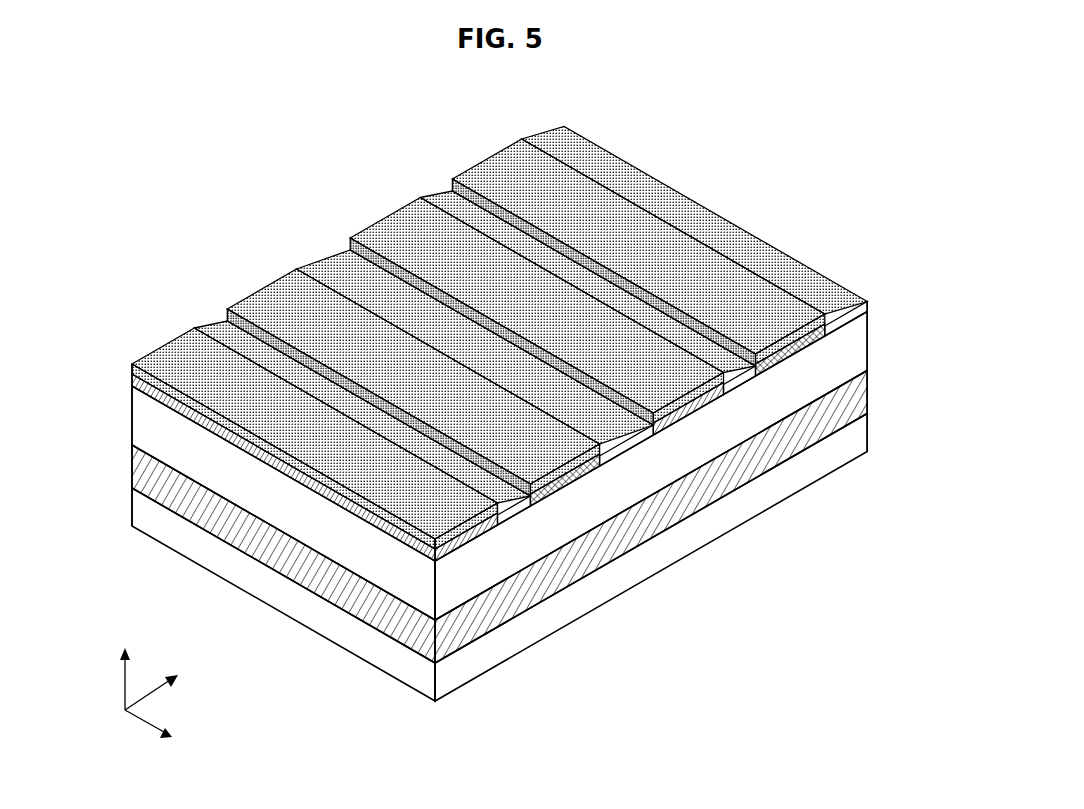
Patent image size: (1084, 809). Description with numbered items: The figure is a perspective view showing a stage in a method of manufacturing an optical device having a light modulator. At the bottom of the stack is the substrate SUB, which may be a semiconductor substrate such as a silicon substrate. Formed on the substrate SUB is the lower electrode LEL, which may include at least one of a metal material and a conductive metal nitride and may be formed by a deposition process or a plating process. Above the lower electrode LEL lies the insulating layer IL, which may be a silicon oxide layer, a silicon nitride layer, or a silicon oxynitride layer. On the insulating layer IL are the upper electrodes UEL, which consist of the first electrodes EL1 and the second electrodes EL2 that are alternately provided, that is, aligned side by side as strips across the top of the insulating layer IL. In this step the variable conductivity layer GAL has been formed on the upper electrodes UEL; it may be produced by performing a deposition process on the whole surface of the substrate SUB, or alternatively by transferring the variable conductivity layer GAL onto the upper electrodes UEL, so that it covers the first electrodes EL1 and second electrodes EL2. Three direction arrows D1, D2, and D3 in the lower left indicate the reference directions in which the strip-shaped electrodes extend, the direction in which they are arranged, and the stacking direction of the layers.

The substrate SUB is at (122, 511).
The lower electrode LEL is at (122, 466).
The insulating layer IL is at (122, 419).
The upper electrodes UEL is at (548, 498).
The first electrodes EL1 is at (468, 546).
The second electrodes EL2 is at (562, 472).
The variable conductivity layer GAL is at (176, 362).
The first direction D1 is at (167, 731).
The second direction D2 is at (167, 686).
The third direction D3 is at (121, 667).